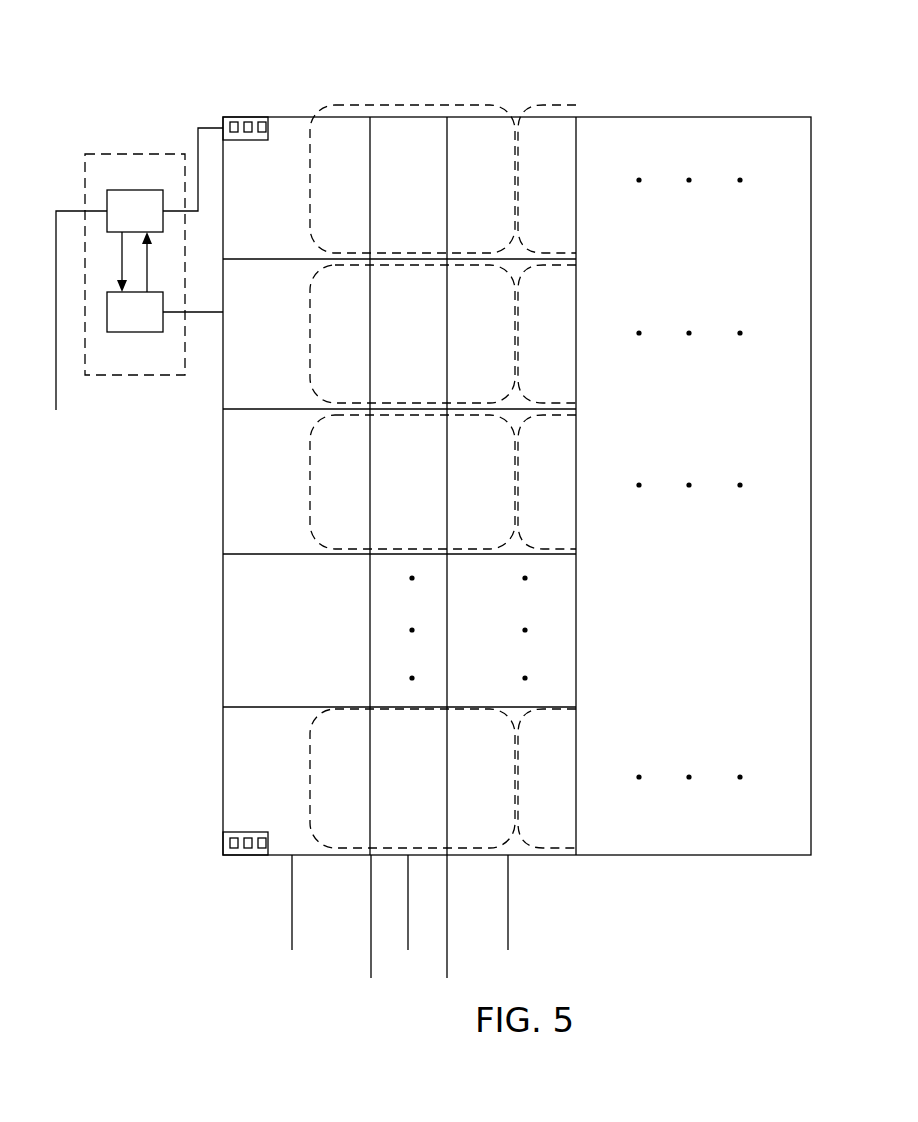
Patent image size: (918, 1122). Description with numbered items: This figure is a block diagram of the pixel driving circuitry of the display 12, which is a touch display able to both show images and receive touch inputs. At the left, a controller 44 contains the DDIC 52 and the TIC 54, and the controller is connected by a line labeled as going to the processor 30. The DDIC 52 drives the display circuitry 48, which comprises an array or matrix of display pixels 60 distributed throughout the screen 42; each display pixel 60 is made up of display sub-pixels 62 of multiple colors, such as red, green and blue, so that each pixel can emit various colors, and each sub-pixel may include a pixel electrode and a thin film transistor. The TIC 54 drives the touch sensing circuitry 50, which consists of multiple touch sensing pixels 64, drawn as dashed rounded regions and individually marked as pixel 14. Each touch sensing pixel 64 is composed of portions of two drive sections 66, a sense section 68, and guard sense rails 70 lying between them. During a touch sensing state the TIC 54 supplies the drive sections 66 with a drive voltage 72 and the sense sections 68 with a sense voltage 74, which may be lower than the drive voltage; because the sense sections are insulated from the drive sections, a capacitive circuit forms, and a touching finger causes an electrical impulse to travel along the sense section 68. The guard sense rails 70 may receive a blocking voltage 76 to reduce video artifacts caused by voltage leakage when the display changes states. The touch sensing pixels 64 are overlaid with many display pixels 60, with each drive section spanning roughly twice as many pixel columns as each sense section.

The display 12 is at (266, 44).
The pixel 14 is at (310, 330).
The processor 30 is at (76, 340).
The screen 42 is at (712, 862).
The controller 44 is at (108, 154).
The display circuitry 48 is at (214, 125).
The touch sensing circuitry 50 is at (213, 842).
The DDIC 52 is at (122, 190).
The TIC 54 is at (125, 332).
The display pixel 60 is at (247, 141).
The display sub-pixel 62 is at (235, 122).
The touch sensing pixel 64 is at (434, 106).
The drive section 66 is at (418, 480).
The sense section 68 is at (409, 483).
The guard sense rail 70 is at (370, 160).
The drive voltage 72 is at (292, 946).
The sense voltage 74 is at (408, 918).
The blocking voltage 76 is at (371, 955).